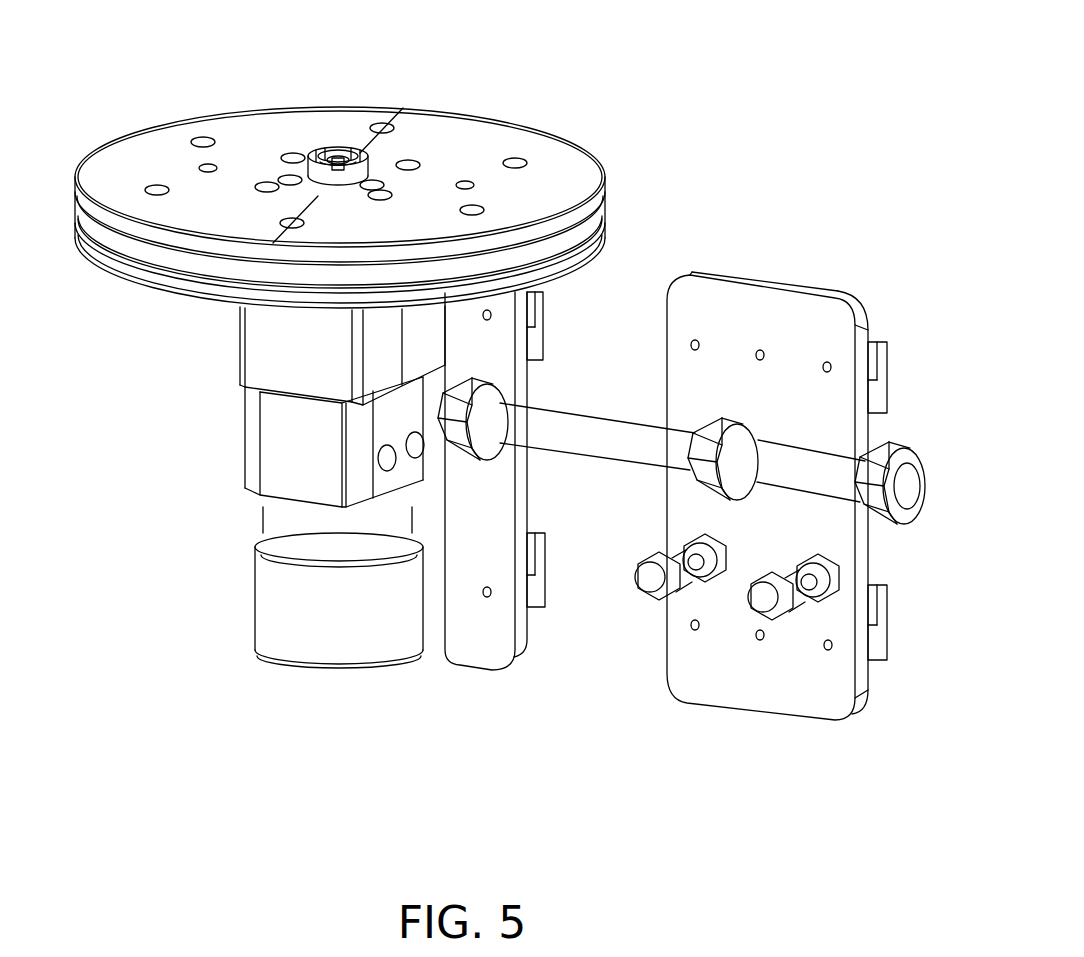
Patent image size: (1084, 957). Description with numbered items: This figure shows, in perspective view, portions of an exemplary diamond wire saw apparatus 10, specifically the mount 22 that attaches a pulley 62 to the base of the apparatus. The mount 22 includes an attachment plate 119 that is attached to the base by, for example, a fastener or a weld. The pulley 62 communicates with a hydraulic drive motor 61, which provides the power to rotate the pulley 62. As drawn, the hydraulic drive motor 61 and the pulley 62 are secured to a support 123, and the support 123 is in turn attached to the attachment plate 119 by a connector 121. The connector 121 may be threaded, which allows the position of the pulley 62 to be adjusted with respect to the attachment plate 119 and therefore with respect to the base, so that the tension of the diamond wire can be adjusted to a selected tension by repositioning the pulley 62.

The assembly 10 is at (733, 80).
The mount 22 is at (751, 300).
The hydraulic drive motor 61 is at (323, 615).
The pulley 62 is at (458, 130).
The attachment plate 119 is at (758, 690).
The connector 121 is at (593, 437).
The support 123 is at (470, 638).